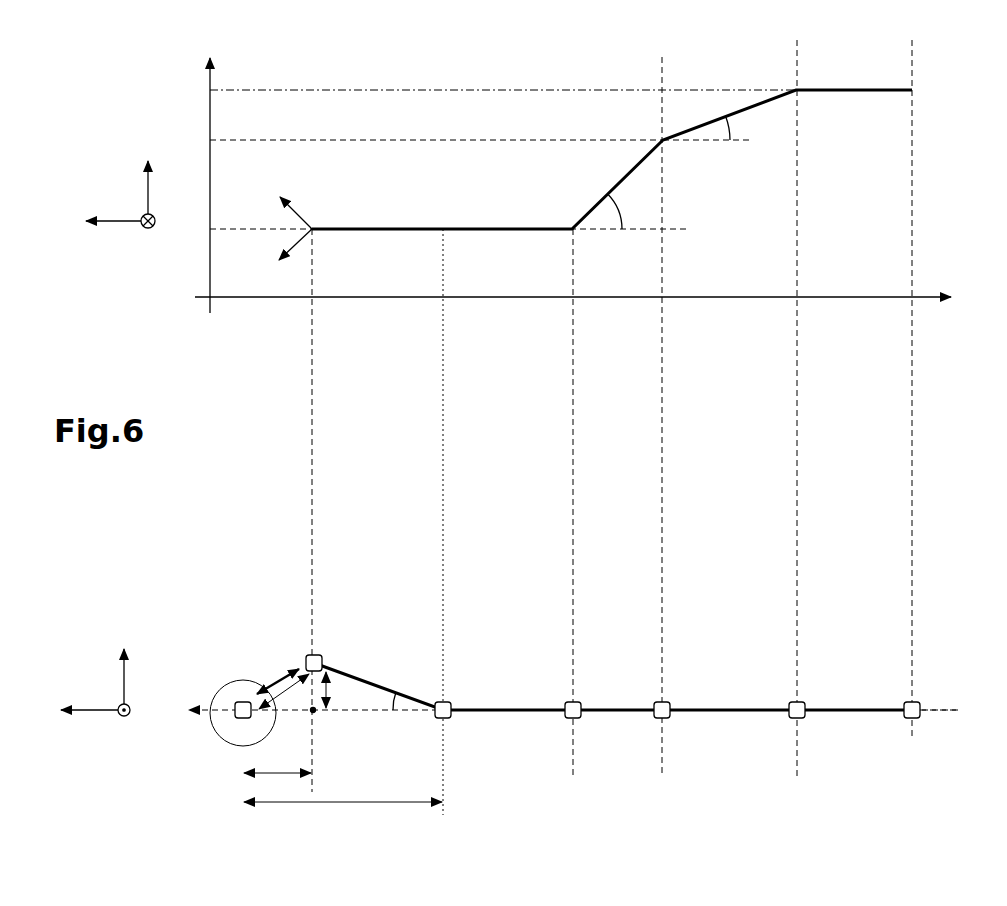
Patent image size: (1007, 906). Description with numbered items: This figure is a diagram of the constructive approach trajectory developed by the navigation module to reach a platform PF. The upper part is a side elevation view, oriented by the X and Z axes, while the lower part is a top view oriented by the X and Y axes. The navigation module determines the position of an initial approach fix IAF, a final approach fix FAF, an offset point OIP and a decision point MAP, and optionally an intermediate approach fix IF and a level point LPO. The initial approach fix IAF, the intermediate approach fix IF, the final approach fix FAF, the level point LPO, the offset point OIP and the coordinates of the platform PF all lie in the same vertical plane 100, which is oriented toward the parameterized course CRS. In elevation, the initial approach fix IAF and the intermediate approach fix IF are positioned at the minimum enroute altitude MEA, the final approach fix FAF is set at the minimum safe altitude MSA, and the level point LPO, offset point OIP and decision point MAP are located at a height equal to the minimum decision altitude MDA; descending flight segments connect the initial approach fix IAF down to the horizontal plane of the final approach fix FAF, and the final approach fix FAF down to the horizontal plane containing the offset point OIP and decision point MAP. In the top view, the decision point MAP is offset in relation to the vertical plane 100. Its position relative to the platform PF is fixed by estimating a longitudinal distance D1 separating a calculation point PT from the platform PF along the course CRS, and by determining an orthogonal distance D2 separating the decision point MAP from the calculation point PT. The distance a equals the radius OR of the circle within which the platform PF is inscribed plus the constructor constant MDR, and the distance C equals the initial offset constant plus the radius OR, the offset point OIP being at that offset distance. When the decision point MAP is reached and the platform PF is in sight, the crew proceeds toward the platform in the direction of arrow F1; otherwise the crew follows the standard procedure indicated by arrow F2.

The minimum enroute altitude MEA is at (561, 78).
The minimum safe altitude MSA is at (436, 128).
The minimum decision altitude MDA is at (448, 216).
The decision point MAP is at (312, 232).
The offset point OIP is at (443, 232).
The level point LPO is at (572, 232).
The final approach fix FAF is at (663, 138).
The intermediate approach fix IF is at (796, 88).
The initial approach fix IAF is at (912, 90).
The platform PF is at (210, 750).
The arrow toward the platform F1 is at (290, 259).
The arrow of standard procedure F2 is at (300, 208).
The constant set by the constructor MDR is at (273, 672).
The radius of circle within which the target platform is inscribed OR is at (268, 688).
The parameterized course CRS is at (561, 694).
The calculation point PT is at (312, 713).
The longitudinal distance D1 is at (277, 761).
The orthogonal distance D2 is at (341, 690).
The distance c C is at (343, 814).
The distance a is at (284, 691).
The vertical plane 100 is at (947, 720).
The X axis X is at (91, 467).
The Y axis Y is at (122, 663).
The Z axis Z is at (136, 442).